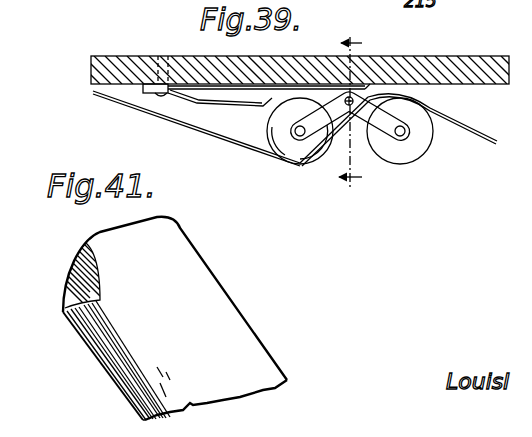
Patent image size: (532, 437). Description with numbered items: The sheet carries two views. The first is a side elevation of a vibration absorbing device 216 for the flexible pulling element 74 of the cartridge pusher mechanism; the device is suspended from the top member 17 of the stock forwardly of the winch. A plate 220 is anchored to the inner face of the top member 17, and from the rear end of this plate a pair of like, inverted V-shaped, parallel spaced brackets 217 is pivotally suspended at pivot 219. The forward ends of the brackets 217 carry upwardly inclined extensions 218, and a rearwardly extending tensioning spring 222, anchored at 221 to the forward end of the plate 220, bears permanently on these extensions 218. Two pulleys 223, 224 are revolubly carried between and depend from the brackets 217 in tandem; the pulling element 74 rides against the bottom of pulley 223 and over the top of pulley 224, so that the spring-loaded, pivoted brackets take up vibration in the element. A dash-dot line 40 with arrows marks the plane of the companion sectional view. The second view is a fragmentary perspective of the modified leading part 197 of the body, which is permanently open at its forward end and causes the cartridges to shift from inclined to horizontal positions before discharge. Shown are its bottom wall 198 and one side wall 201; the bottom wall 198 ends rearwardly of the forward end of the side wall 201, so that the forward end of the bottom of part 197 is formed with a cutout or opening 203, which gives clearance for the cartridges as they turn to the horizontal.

In FIG. 39, the top member 17 is at (295, 59).
In FIG. 39, the axis / section line 40 is at (349, 109).
In FIG. 39, the flexible pulling element 74 is at (448, 126).
In FIG. 39, the vibration absorbing device 216 is at (268, 96).
In FIG. 39, the brackets 217 is at (342, 127).
In FIG. 39, the upwardly inclined extensions 218 is at (276, 140).
In FIG. 39, the pivot 219 is at (356, 100).
In FIG. 39, the plate 220 is at (257, 87).
In FIG. 39, the anchorage 221 is at (163, 97).
In FIG. 39, the tensioning spring 222 is at (250, 108).
In FIG. 39, the pulley 223 is at (297, 157).
In FIG. 39, the pulley 224 is at (409, 157).
In FIG. 41, the leading part 197 is at (219, 270).
In FIG. 41, the bottom wall 198 is at (110, 363).
In FIG. 41, the side wall 201 is at (223, 342).
In FIG. 41, the cutout or opening 203 is at (72, 292).